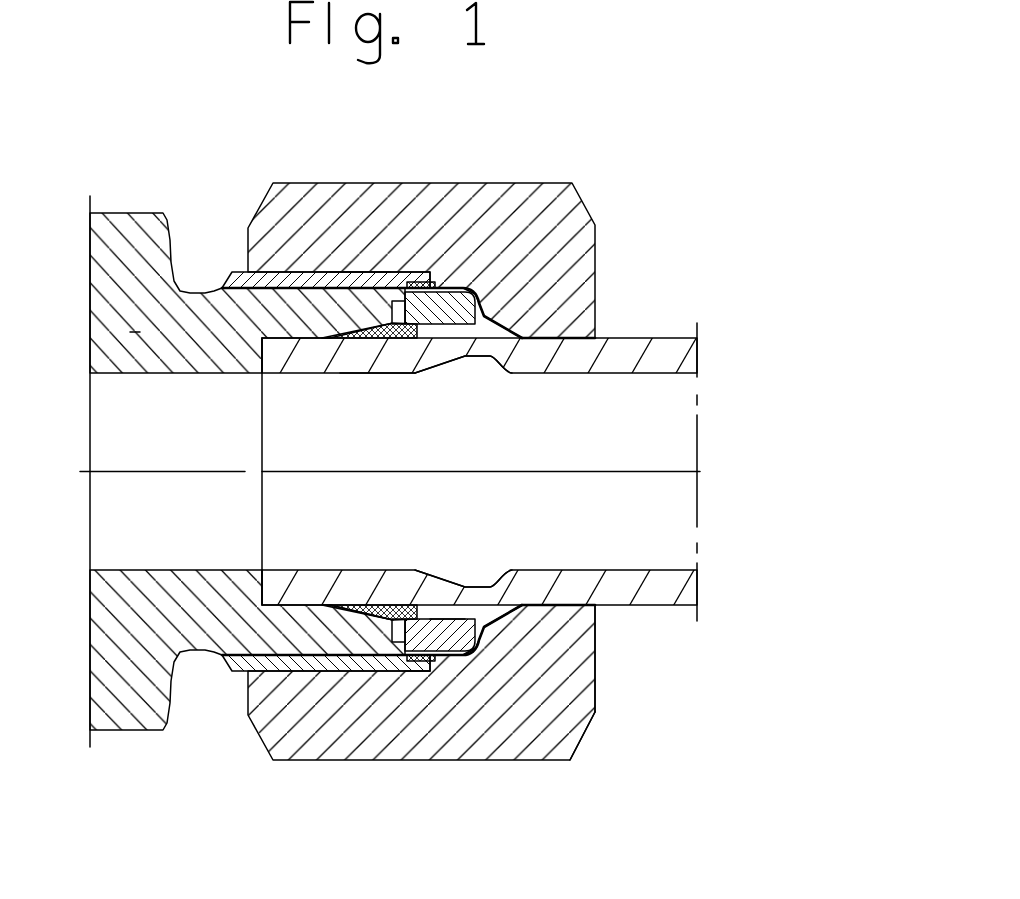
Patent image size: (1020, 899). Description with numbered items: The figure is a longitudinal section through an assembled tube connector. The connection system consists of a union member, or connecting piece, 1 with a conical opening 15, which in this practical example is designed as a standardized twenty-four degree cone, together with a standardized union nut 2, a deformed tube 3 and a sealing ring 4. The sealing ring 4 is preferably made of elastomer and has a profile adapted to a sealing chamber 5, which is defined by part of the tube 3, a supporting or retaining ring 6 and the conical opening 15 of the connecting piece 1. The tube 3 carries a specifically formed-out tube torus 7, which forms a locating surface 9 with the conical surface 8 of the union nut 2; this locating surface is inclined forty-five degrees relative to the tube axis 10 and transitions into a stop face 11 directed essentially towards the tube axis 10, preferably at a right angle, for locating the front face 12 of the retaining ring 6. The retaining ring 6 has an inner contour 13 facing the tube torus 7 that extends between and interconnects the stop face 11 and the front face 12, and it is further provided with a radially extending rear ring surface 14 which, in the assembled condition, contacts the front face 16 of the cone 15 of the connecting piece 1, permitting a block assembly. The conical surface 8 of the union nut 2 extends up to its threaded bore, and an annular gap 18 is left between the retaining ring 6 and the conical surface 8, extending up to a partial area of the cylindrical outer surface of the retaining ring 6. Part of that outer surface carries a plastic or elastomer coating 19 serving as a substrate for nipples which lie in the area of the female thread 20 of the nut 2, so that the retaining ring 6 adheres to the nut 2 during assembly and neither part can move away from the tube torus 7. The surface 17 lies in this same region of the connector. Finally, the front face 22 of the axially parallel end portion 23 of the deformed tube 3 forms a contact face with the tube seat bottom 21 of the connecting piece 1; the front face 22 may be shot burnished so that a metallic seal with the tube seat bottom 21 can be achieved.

The union member 1 is at (130, 733).
The union nut 2 is at (415, 758).
The deformed tube 3 is at (667, 606).
The sealing ring 4 is at (376, 672).
The sealing chamber 5 is at (322, 665).
The retaining ring 6 is at (463, 292).
The tube torus 7 is at (432, 593).
The conical surface 8 is at (573, 758).
The locating surface 9 is at (595, 707).
The tube axis 10 is at (702, 473).
The stop face 11 is at (512, 607).
The front face 12 is at (478, 615).
The inner contour 13 is at (435, 339).
The rear ring surface 14 is at (428, 672).
The conical opening 15 is at (346, 615).
The front face of the cone 16 is at (393, 655).
The ring end face 17 is at (443, 680).
The annular gap 18 is at (466, 668).
The plastic or elastomer coating 19 is at (428, 283).
The female thread 20 is at (361, 274).
The tube seat bottom 21 is at (262, 607).
The front face 22 is at (262, 352).
The axially parallel end portion 23 is at (376, 374).